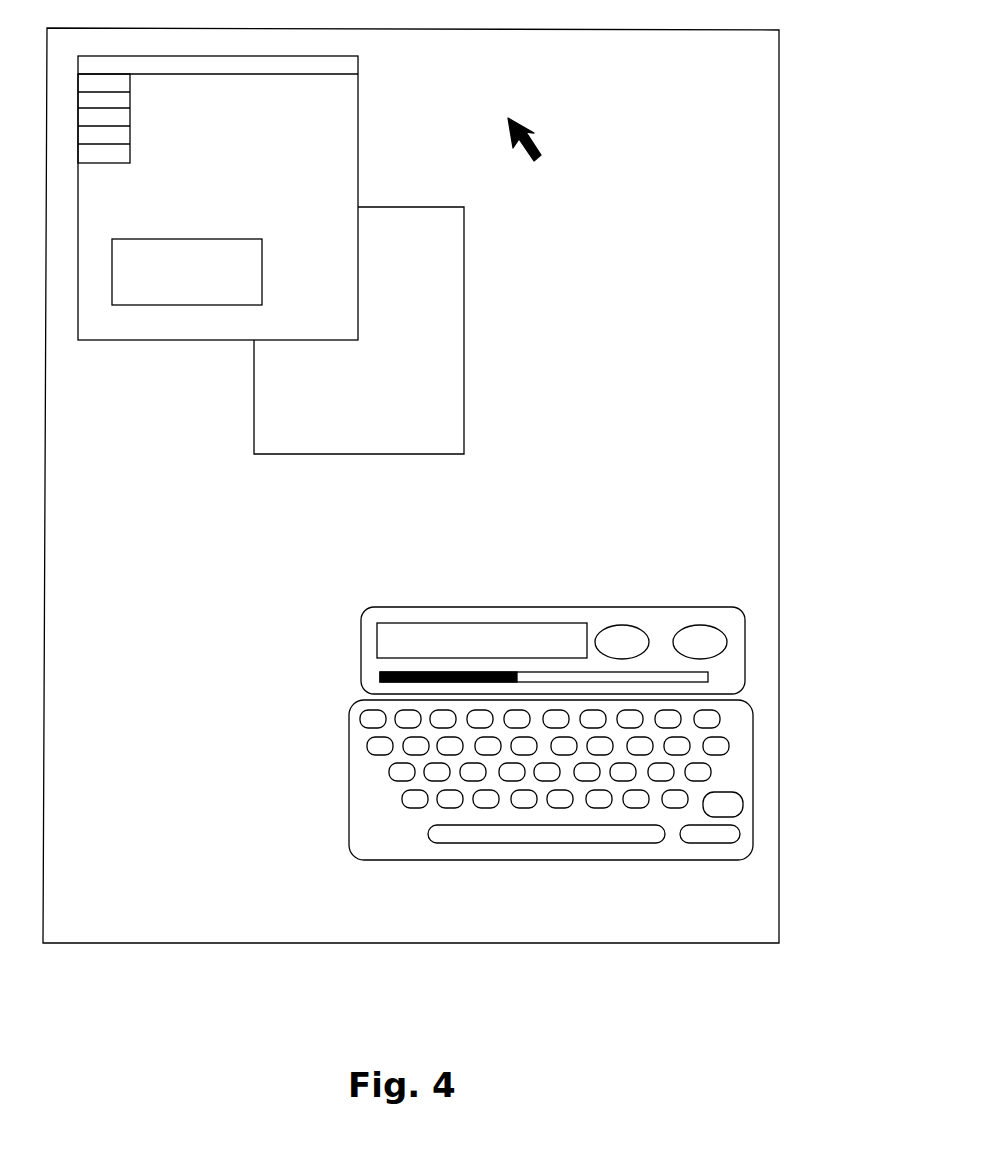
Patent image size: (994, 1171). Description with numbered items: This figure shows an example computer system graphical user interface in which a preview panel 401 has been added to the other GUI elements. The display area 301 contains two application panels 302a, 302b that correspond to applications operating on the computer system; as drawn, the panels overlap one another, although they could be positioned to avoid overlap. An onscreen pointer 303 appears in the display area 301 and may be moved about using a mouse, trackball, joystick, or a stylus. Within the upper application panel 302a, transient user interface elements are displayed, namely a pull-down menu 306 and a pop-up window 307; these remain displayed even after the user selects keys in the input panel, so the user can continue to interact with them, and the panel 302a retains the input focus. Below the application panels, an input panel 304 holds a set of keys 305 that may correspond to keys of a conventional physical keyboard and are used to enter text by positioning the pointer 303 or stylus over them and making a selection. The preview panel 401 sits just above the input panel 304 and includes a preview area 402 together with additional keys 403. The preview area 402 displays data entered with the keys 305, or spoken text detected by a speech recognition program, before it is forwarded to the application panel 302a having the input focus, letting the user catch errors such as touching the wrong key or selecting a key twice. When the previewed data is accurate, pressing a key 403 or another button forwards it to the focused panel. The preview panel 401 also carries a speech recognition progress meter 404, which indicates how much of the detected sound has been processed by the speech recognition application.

The display area 301 is at (723, 110).
The application panel 302a is at (190, 344).
The application panel 302b is at (356, 459).
The onscreen pointer 303 is at (550, 150).
The input panel 304 is at (355, 857).
The key 305 is at (373, 759).
The pull-down menu 306 is at (139, 124).
The pop-up window 307 is at (188, 236).
The preview panel 401 is at (356, 651).
The preview area 402 is at (446, 620).
The additional key 403 is at (618, 623).
The speech recognition progress meter 404 is at (360, 684).